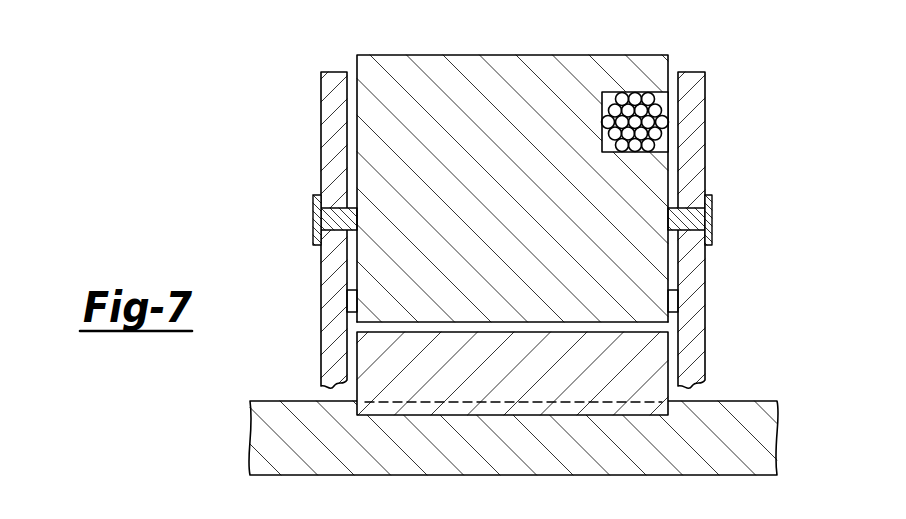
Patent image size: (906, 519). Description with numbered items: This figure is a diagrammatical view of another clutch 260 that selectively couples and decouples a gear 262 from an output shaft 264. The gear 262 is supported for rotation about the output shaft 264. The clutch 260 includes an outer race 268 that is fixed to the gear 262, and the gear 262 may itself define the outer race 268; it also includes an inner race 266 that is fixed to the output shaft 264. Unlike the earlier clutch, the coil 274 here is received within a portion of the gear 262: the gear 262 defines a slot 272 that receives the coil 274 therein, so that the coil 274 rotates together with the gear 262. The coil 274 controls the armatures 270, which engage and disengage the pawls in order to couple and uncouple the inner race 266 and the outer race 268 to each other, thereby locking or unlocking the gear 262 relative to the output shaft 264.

The clutch 260 is at (299, 334).
The gear 262 is at (433, 64).
The output shaft 264 is at (738, 400).
The inner race 266 is at (365, 380).
The outer race 268 is at (383, 320).
The armatures 270 is at (334, 71).
The slot 272 is at (613, 96).
The coil 274 is at (636, 99).